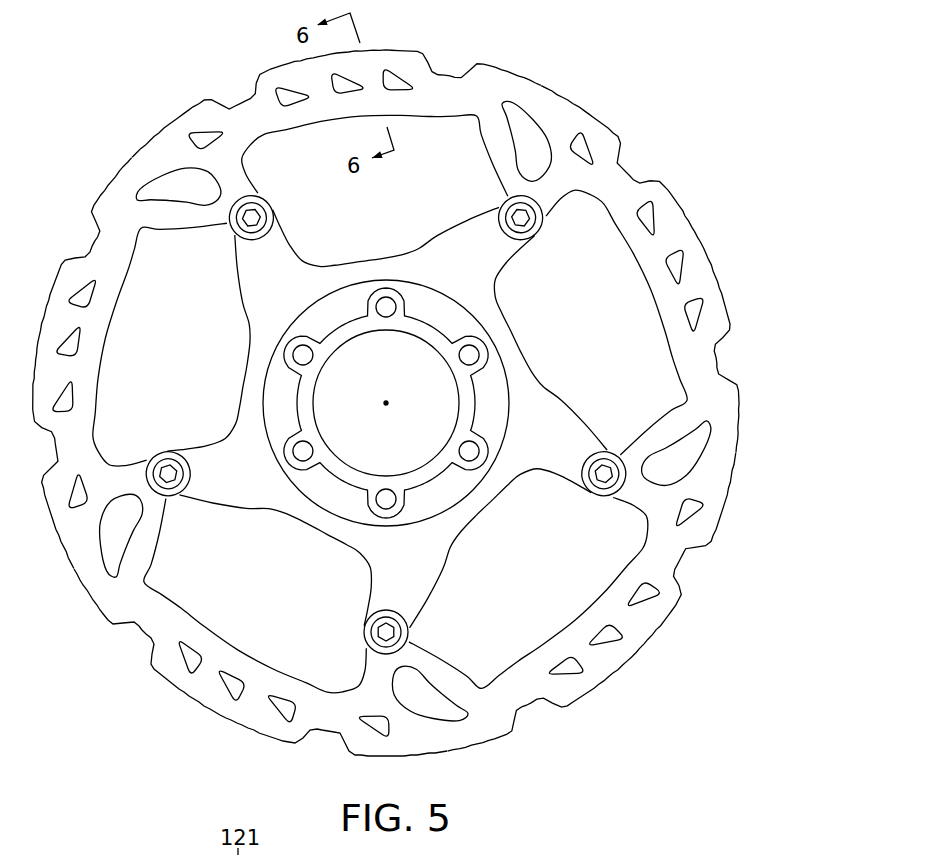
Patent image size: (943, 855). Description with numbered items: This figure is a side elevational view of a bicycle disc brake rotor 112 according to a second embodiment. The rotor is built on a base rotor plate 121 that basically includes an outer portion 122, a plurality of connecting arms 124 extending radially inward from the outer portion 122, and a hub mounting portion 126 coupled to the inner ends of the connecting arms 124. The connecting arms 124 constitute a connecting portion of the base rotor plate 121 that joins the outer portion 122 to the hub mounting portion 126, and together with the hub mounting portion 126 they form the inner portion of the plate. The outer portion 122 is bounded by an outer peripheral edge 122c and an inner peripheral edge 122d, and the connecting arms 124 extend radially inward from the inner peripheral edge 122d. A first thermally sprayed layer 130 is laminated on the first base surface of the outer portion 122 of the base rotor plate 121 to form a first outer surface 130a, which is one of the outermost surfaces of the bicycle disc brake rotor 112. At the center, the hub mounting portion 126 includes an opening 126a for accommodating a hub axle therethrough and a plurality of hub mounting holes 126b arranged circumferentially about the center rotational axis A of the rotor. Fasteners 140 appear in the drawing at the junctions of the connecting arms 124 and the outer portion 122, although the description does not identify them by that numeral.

The bicycle disc brake rotor 112 is at (617, 72).
The base rotor plate 121 is at (795, 293).
The outer portion 122 is at (723, 423).
The outer peripheral edge 122c is at (120, 173).
The inner peripheral edge 122d is at (298, 128).
The connecting arms 124 is at (187, 222).
The hub mounting portion 126 is at (552, 373).
The opening 126a is at (433, 457).
The hub mounting holes 126b is at (303, 357).
The first thermally sprayed layer 130 is at (693, 282).
The first outer surface 130a is at (623, 197).
The fastener / rivet 140 is at (266, 231).
The center rotational axis A is at (388, 406).